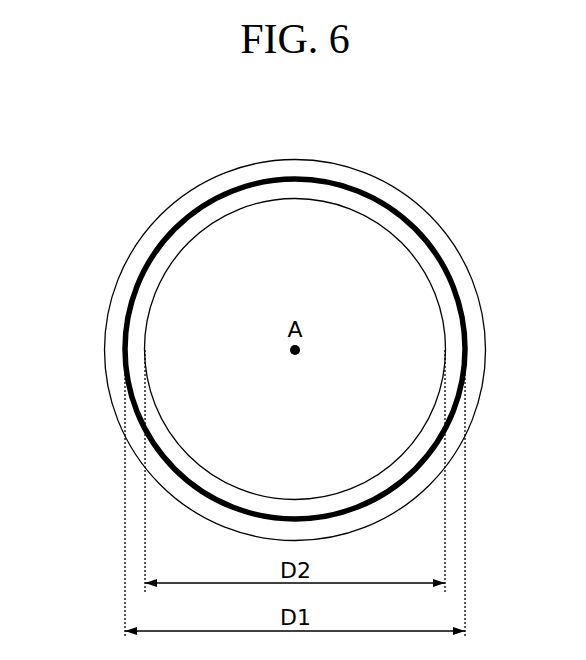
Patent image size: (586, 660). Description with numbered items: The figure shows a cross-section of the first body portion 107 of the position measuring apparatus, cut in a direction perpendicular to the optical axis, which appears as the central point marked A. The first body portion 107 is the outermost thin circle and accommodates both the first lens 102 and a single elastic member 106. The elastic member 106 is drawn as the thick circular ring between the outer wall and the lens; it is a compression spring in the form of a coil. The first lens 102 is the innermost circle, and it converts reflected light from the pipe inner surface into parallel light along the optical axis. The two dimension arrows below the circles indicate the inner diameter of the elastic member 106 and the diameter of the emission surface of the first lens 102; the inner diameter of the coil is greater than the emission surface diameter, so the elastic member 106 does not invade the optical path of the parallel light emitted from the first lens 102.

The first lens 102 is at (428, 300).
The elastic member 106 is at (302, 178).
The first body portion 107 is at (112, 297).